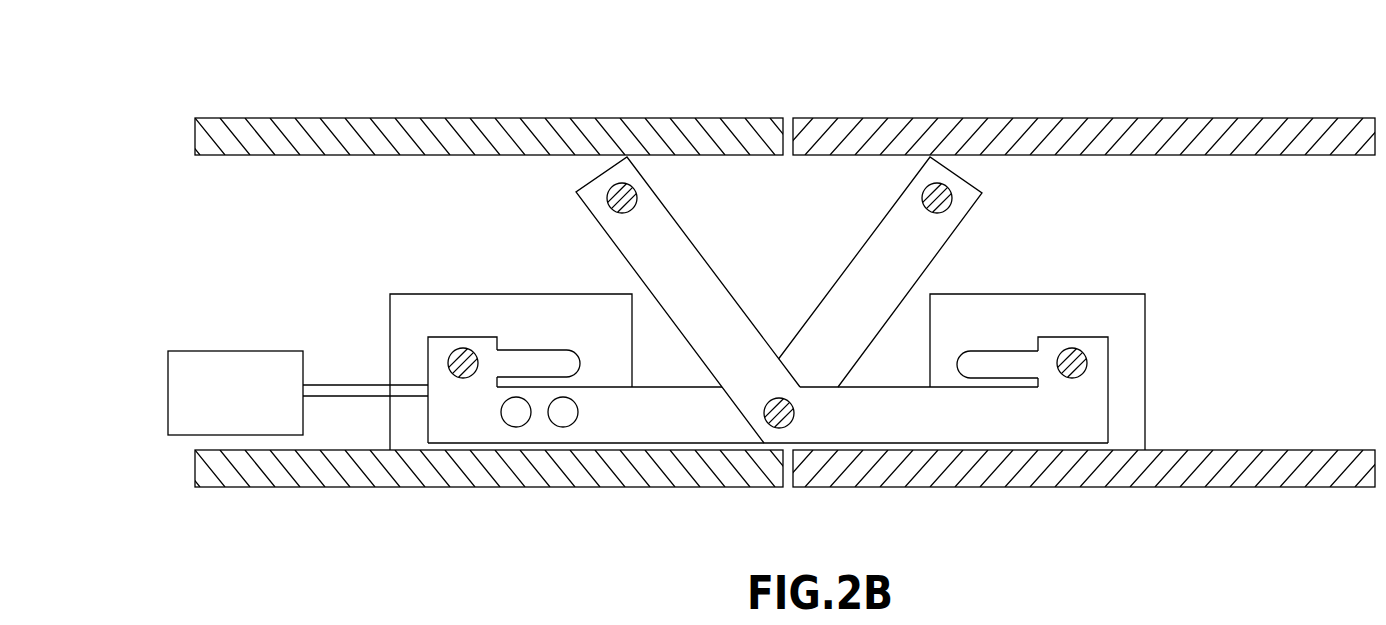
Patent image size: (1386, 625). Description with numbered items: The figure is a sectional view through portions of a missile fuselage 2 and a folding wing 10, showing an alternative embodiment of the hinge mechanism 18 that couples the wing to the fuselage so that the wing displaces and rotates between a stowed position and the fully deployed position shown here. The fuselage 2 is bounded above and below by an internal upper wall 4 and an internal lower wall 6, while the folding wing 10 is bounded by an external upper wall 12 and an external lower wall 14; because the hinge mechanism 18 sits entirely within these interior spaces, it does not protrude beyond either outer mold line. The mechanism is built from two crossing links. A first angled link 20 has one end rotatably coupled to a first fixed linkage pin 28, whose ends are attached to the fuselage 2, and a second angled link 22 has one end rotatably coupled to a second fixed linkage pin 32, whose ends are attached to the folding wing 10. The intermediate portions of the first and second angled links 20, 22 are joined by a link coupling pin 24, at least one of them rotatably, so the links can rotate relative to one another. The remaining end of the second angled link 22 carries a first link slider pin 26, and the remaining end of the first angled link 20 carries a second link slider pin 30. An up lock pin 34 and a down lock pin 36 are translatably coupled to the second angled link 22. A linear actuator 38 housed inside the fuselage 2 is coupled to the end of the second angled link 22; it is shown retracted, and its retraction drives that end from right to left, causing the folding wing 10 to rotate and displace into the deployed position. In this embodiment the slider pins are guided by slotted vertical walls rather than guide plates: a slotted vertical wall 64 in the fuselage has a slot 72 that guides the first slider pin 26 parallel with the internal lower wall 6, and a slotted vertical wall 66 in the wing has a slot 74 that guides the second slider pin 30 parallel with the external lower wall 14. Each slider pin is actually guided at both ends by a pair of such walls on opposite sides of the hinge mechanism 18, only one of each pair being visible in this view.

The fuselage 2 is at (460, 100).
The internal upper wall 4 is at (250, 118).
The internal lower wall 6 is at (288, 487).
The folding wing 10 is at (1230, 100).
The external upper wall 12 is at (1090, 118).
The external lower wall 14 is at (1207, 487).
The hinge mechanism 18 is at (787, 210).
The first angled link 20 is at (610, 238).
The second angled link 22 is at (962, 220).
The link coupling pin 24 is at (769, 424).
The first link slider pin 26 is at (454, 374).
The first fixed linkage pin 28 is at (624, 190).
The second link slider pin 30 is at (1082, 372).
The second fixed linkage pin 32 is at (940, 192).
The up lock pin 34 is at (505, 421).
The down lock pin 36 is at (575, 421).
The linear actuator 38 is at (175, 351).
The slotted vertical wall 64 is at (428, 294).
The slotted vertical wall 66 is at (1088, 294).
The slot 72 is at (578, 358).
The slot 74 is at (960, 357).